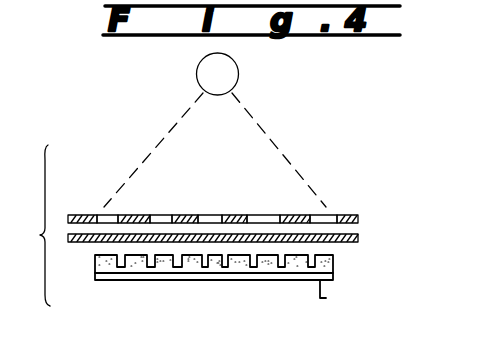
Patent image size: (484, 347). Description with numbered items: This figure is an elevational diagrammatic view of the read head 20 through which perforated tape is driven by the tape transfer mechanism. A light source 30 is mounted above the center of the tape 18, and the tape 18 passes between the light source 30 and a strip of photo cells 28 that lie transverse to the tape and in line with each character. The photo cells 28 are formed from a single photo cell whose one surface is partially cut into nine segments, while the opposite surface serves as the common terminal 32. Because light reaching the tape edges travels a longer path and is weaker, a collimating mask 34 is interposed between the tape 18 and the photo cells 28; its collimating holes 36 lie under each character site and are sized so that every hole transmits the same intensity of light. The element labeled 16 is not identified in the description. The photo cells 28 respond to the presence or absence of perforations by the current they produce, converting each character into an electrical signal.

The light source 30 is at (239, 74).
The read head 20 is at (303, 166).
The tape 18 is at (357, 222).
The semiconductor elements 16 is at (268, 215).
The collimating mask 34 is at (360, 241).
The collimating holes 36 is at (160, 234).
The photo cells 28 is at (334, 270).
The common terminal 32 is at (326, 298).